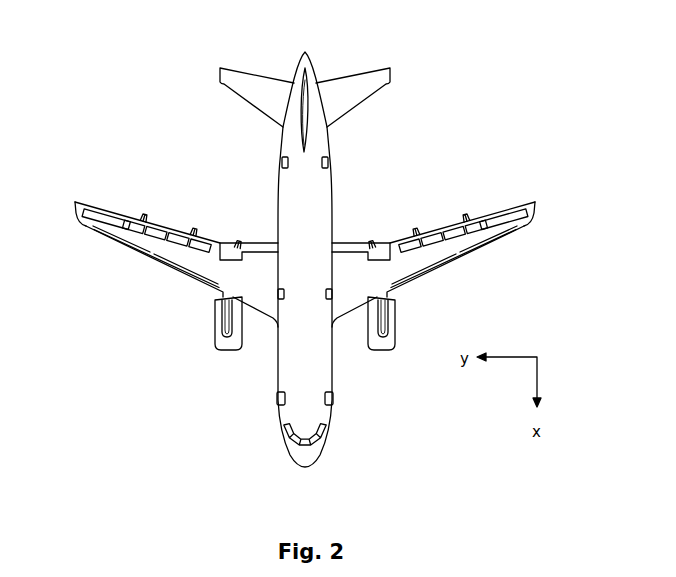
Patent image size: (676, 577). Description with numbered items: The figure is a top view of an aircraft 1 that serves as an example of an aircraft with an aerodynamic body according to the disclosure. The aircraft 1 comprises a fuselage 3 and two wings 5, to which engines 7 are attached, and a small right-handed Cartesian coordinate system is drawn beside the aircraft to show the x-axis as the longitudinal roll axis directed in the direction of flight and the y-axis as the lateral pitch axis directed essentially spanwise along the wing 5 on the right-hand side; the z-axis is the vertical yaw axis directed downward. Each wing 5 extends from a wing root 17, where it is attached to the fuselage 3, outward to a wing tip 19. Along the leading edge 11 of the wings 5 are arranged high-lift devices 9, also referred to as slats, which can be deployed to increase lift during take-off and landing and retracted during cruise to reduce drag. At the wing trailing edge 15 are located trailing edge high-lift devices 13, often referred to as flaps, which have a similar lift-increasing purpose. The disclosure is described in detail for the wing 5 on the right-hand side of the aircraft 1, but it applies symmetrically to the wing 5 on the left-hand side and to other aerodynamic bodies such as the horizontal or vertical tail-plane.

The aircraft 1 is at (327, 255).
The fuselage 3 is at (297, 205).
The wings 5 is at (327, 269).
The engines 7 is at (232, 347).
The high-lift devices 9 is at (475, 232).
The leading edge 11 is at (157, 281).
The trailing edge high-lift devices 13 is at (182, 235).
The wing trailing edge 15 is at (158, 224).
The wing root 17 is at (333, 277).
The wing tip 19 is at (535, 205).